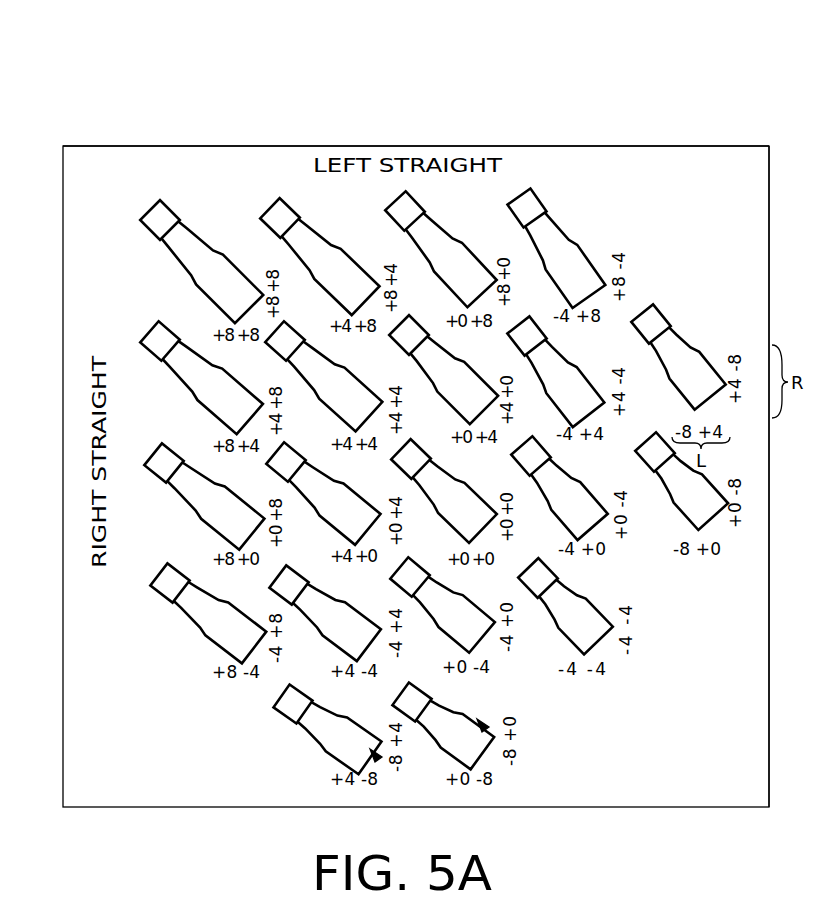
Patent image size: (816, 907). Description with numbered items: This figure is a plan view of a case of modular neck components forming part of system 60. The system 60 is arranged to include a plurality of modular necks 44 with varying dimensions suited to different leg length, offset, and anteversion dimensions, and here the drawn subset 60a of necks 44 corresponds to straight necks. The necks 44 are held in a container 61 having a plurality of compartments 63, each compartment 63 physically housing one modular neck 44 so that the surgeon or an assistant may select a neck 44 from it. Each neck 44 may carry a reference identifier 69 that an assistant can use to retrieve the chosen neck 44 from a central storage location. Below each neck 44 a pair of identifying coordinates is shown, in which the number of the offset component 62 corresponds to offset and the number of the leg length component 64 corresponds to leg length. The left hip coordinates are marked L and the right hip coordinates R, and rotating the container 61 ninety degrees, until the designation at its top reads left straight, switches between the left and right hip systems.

The modular neck 44 is at (203, 248).
The system 60 is at (711, 84).
The subset of necks 60a is at (632, 143).
The container 61 is at (740, 155).
The offset component 62 is at (218, 566).
The compartment 63 is at (165, 199).
The leg length component 64 is at (247, 572).
The reference identifier 69 is at (486, 724).